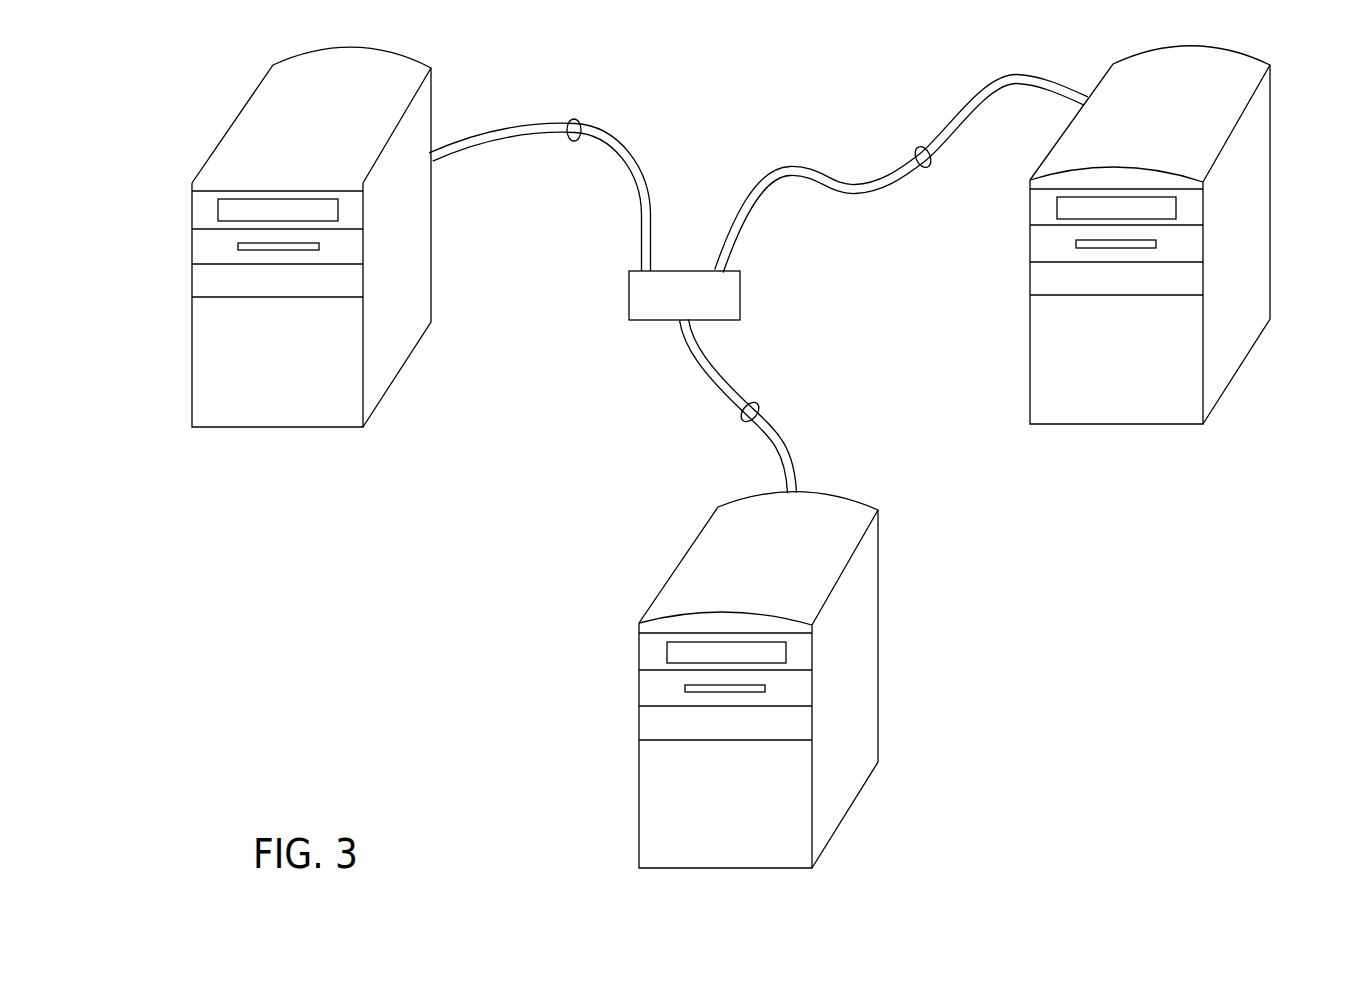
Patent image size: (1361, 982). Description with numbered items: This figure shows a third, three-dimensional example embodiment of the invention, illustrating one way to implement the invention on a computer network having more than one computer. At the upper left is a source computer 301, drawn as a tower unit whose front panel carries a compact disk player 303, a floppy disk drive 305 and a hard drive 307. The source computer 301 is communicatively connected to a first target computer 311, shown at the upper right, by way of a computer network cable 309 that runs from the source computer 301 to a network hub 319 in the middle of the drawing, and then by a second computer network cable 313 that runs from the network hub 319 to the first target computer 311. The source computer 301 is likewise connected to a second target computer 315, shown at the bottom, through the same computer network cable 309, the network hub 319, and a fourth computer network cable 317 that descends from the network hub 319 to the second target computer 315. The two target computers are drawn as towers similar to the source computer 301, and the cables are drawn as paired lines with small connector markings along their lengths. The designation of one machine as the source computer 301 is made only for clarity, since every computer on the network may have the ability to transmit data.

The source computer 301 is at (317, 237).
The compact disk player 303 is at (208, 207).
The floppy disk drive 305 is at (208, 257).
The hard drive 307 is at (213, 287).
The computer network cable 309 is at (574, 119).
The first target computer 311 is at (1222, 113).
The second computer network cable 313 is at (922, 146).
The second target computer 315 is at (835, 543).
The fourth computer network cable 317 is at (757, 401).
The network hub 319 is at (722, 303).